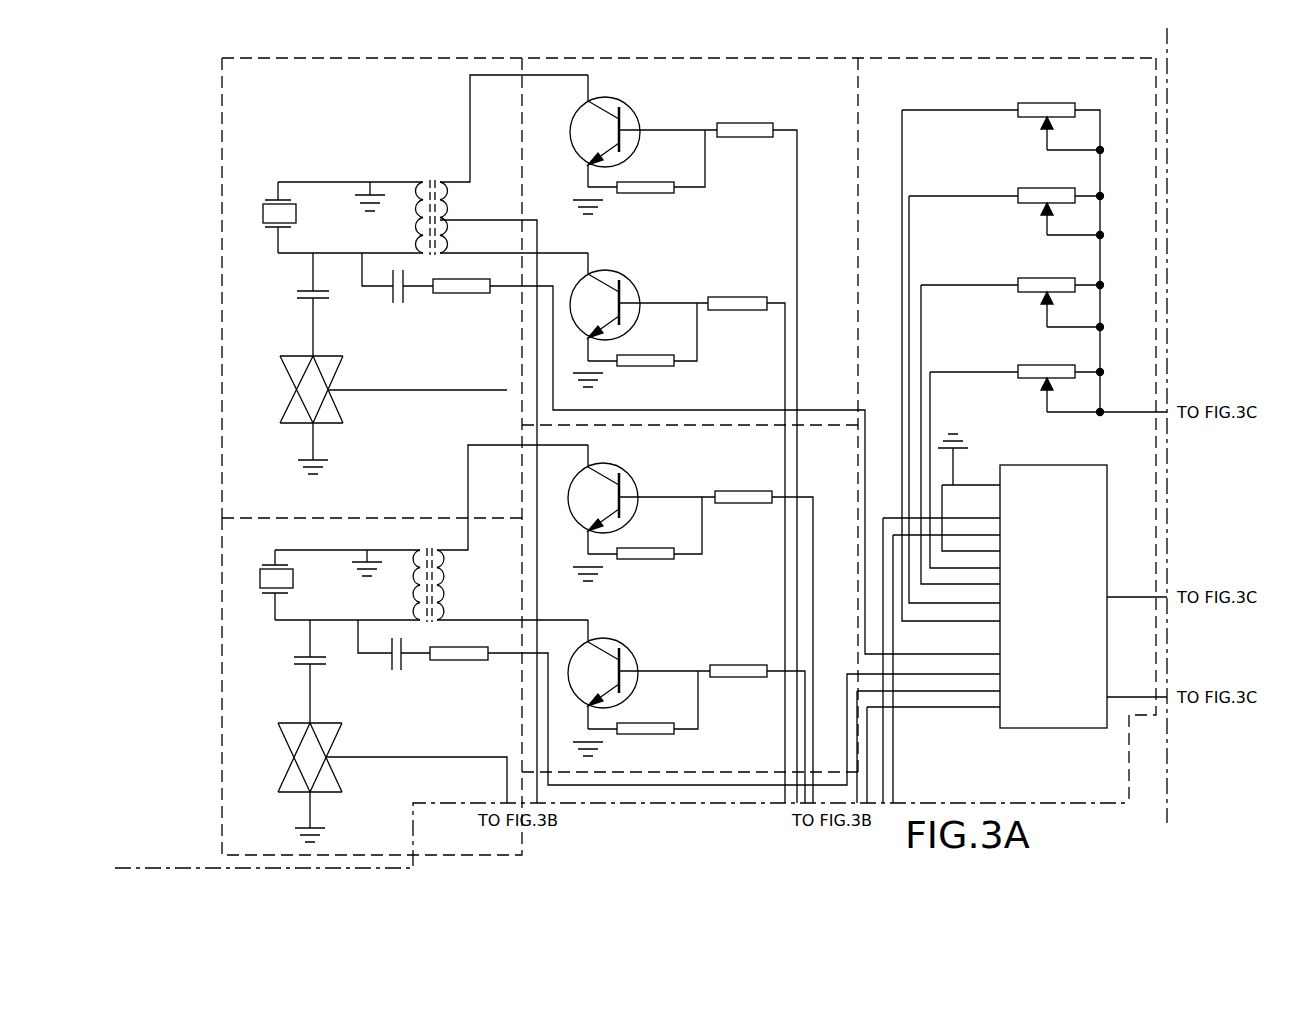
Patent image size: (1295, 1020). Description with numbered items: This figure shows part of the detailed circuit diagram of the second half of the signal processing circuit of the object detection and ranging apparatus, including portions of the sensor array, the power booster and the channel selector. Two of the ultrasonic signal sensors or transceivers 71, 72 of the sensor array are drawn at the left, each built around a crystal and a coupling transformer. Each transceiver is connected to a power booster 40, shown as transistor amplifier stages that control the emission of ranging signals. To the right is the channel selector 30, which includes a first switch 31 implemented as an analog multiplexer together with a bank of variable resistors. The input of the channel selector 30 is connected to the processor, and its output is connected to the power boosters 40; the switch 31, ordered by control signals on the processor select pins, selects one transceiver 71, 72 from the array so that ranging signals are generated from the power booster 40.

The channel selector 30 is at (1135, 118).
The first switch 31 is at (1095, 515).
The power booster 40 is at (720, 58).
The signal transceiver 71 is at (228, 458).
The signal transceiver 72 is at (222, 643).